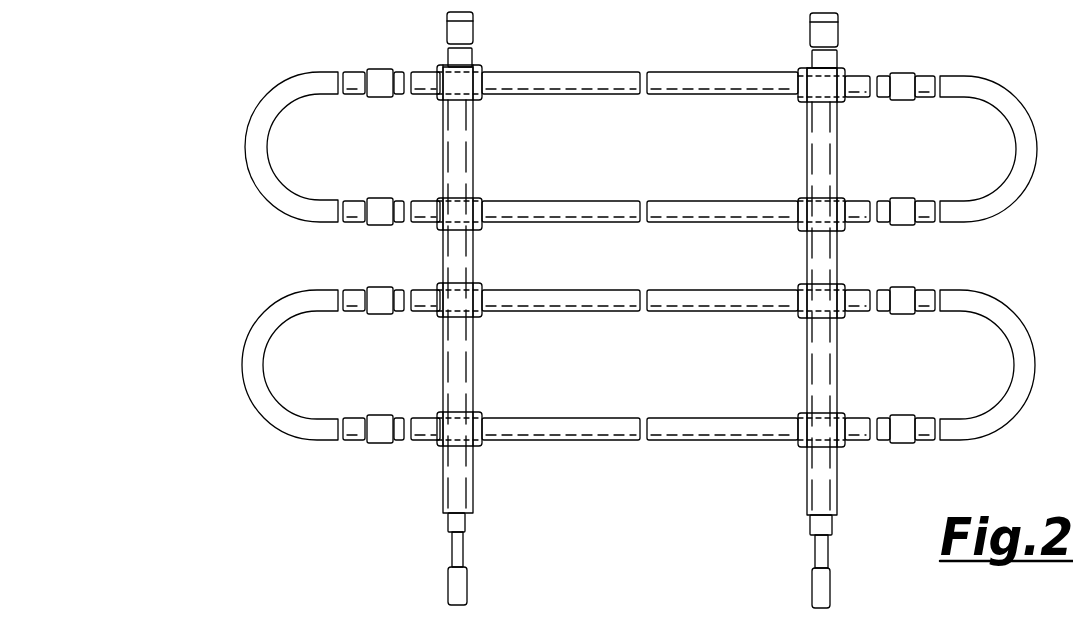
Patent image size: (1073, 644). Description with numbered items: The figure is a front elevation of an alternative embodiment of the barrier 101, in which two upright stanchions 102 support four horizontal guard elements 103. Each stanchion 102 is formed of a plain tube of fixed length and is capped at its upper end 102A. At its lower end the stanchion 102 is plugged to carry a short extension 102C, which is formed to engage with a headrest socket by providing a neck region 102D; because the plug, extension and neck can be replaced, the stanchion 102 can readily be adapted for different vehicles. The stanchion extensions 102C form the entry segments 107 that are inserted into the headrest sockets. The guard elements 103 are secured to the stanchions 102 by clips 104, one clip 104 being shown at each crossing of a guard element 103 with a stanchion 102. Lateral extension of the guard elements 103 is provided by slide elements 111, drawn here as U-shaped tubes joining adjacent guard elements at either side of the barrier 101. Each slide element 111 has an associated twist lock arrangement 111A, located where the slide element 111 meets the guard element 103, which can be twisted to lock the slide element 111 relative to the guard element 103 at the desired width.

The barrier 101 is at (275, 245).
The stanchion 102 is at (455, 477).
The upper end 102A is at (474, 18).
The short extension 102C is at (450, 523).
The neck region 102D is at (461, 553).
The guard element 103 is at (595, 210).
The clip 104 is at (443, 90).
The entry segment 107 is at (432, 578).
The slide element 111 is at (270, 100).
The twist lock arrangement 111A is at (376, 96).